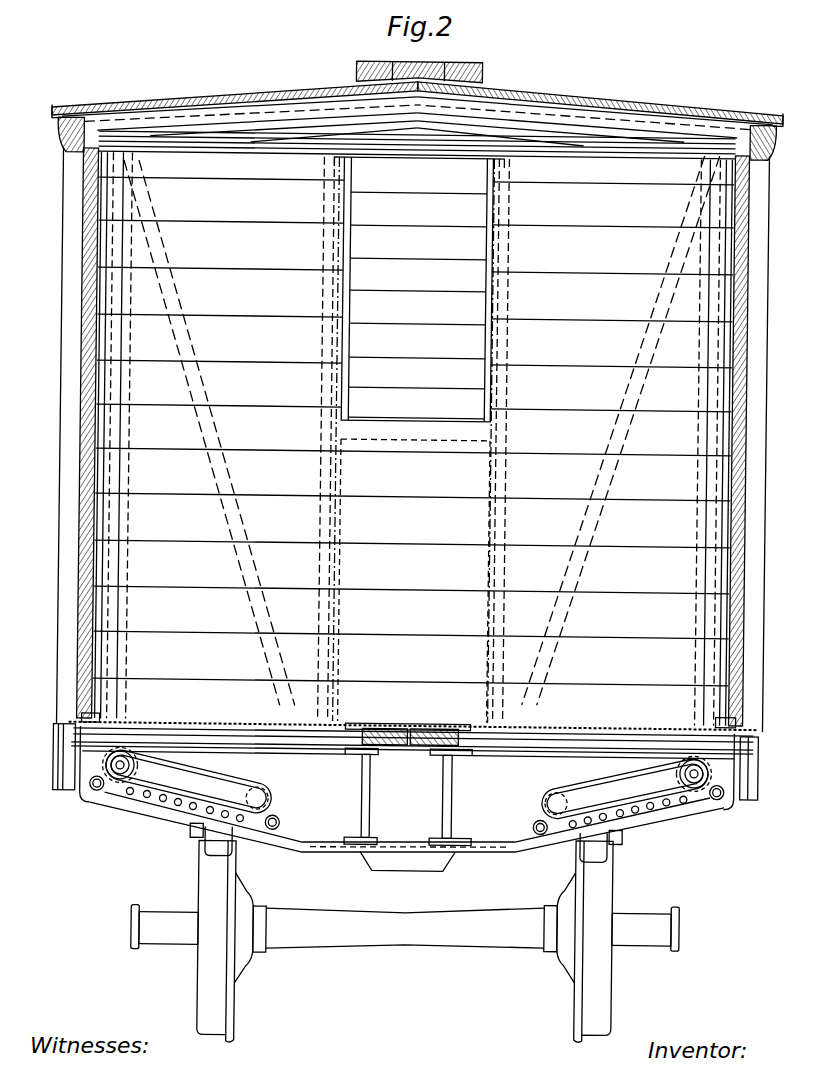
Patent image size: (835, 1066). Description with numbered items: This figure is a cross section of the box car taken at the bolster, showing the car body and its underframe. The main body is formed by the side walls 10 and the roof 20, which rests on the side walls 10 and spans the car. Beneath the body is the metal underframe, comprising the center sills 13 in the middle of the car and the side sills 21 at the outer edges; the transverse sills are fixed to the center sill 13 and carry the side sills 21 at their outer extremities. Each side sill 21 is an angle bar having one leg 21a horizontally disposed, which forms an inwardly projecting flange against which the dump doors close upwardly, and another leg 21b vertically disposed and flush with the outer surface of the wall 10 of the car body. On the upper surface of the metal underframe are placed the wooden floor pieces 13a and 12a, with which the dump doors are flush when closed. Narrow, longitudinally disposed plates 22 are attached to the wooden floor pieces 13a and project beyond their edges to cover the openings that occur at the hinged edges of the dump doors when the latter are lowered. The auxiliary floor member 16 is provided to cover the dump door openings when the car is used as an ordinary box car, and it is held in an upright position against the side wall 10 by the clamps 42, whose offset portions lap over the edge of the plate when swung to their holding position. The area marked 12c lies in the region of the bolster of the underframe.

The roof 20 is at (202, 100).
The side wall 10 is at (82, 482).
The clamp 42 is at (94, 407).
The auxiliary floor member 16 is at (724, 626).
The wooden floor piece 12a is at (179, 725).
The longitudinally disposed plate 22 is at (360, 728).
The wooden floor piece 13a is at (402, 727).
The center sill 13 is at (451, 768).
The body bolster 12c is at (407, 813).
The side sill 21 is at (77, 723).
The horizontally disposed leg 21a is at (754, 720).
The vertically disposed leg 21b is at (739, 753).